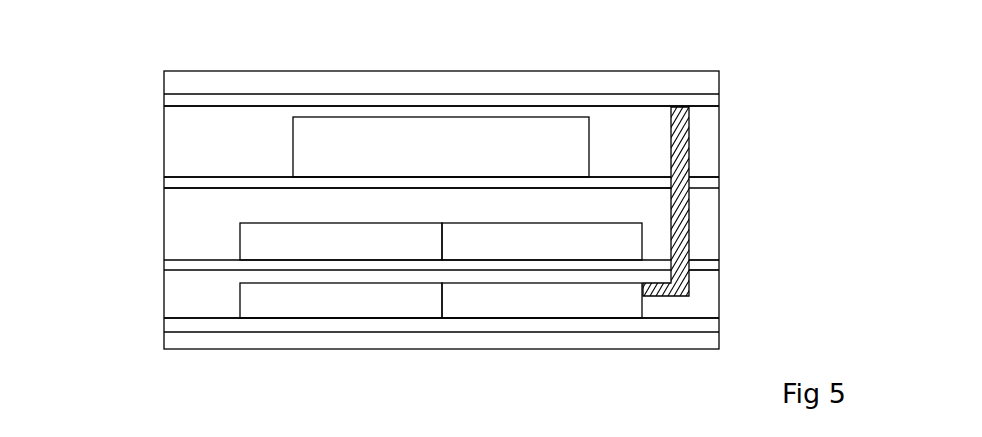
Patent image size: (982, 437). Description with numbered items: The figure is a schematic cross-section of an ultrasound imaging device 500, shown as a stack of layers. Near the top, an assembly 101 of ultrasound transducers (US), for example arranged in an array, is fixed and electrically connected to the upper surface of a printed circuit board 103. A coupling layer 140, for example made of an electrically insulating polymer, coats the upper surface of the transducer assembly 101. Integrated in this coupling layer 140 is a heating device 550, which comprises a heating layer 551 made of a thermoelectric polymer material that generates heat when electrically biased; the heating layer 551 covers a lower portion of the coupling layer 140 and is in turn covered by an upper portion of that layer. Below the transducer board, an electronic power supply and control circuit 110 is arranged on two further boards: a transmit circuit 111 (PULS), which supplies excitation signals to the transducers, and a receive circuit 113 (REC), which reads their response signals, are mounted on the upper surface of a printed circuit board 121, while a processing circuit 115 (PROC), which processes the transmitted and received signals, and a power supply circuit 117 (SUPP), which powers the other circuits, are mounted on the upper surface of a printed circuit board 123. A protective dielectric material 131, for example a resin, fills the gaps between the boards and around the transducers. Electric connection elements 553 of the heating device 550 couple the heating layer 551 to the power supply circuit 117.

The ultrasound imaging device 500 is at (162, 53).
The heating device 550 is at (568, 86).
The heating layer 551 is at (656, 101).
The coupling layer 140 is at (700, 118).
The assembly of ultrasound transducers 101 is at (573, 143).
The printed circuit board 103 is at (707, 184).
The electric connection elements 553 is at (680, 207).
The protective dielectric material 131 is at (177, 211).
The electronic power supply and control circuit 110 is at (120, 275).
The transmit circuit 111 is at (257, 241).
The receive circuit 113 is at (610, 242).
The printed circuit board 121 is at (705, 265).
The processing circuit 115 is at (256, 299).
The power supply circuit 117 is at (620, 308).
The printed circuit board 123 is at (705, 325).